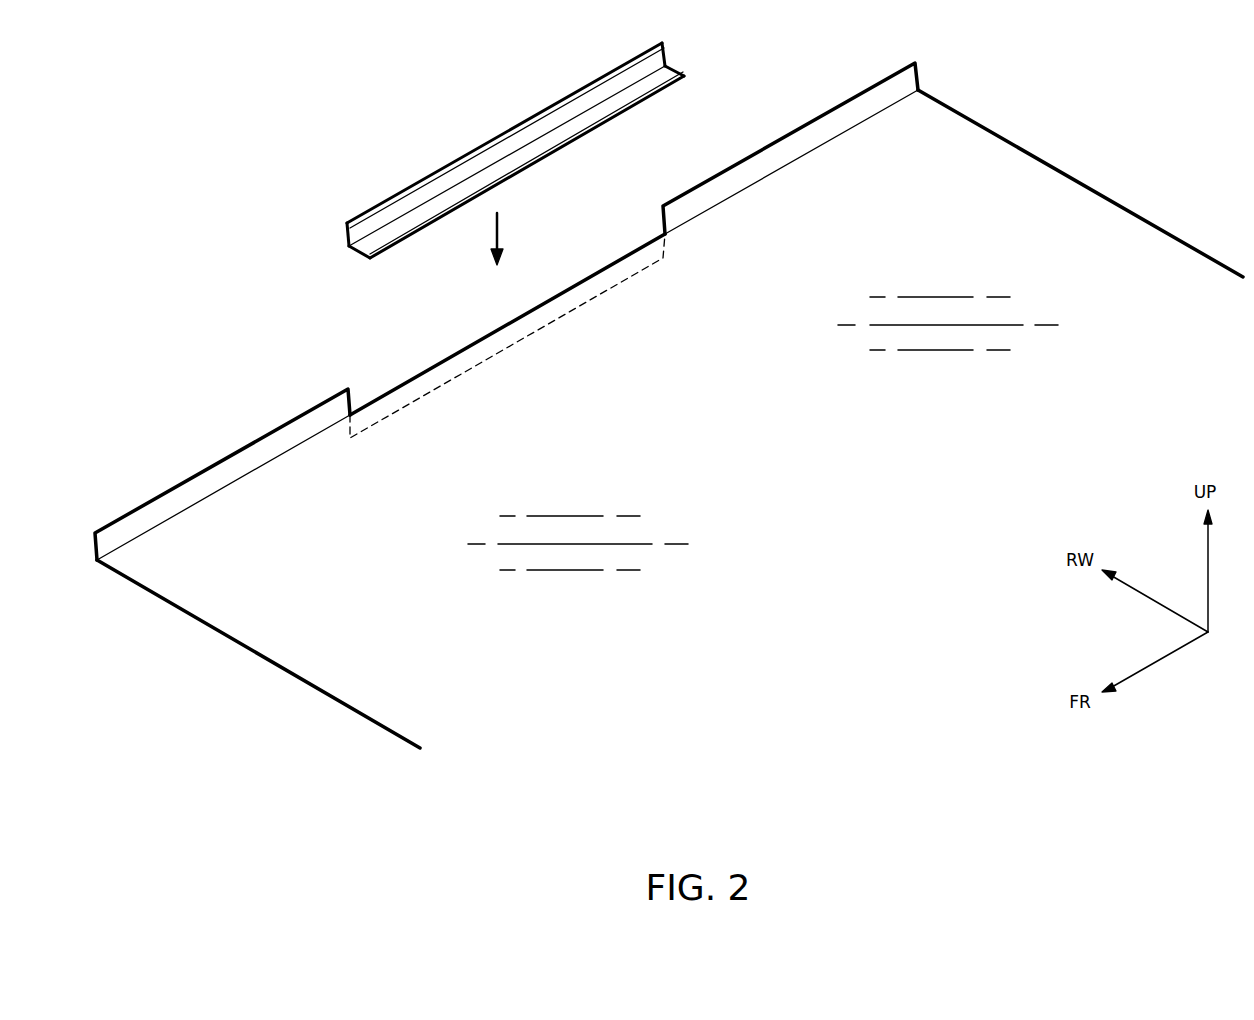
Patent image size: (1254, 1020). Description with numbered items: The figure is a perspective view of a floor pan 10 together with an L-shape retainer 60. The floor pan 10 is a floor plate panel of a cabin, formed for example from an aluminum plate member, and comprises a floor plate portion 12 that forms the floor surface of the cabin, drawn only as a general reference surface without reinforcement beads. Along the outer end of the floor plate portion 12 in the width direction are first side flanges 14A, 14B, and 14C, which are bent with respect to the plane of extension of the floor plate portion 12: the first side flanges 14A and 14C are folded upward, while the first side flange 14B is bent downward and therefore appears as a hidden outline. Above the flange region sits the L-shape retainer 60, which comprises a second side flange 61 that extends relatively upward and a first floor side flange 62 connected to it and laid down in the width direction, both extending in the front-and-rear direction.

The floor pan 10 is at (290, 676).
The floor plate portion 12 is at (208, 589).
The first side flange 14A is at (277, 442).
The first side flange 14B is at (477, 355).
The first side flange 14C is at (858, 113).
The L-shape retainer 60 is at (496, 143).
The second side flange 61 is at (437, 185).
The first floor side flange 62 is at (510, 167).